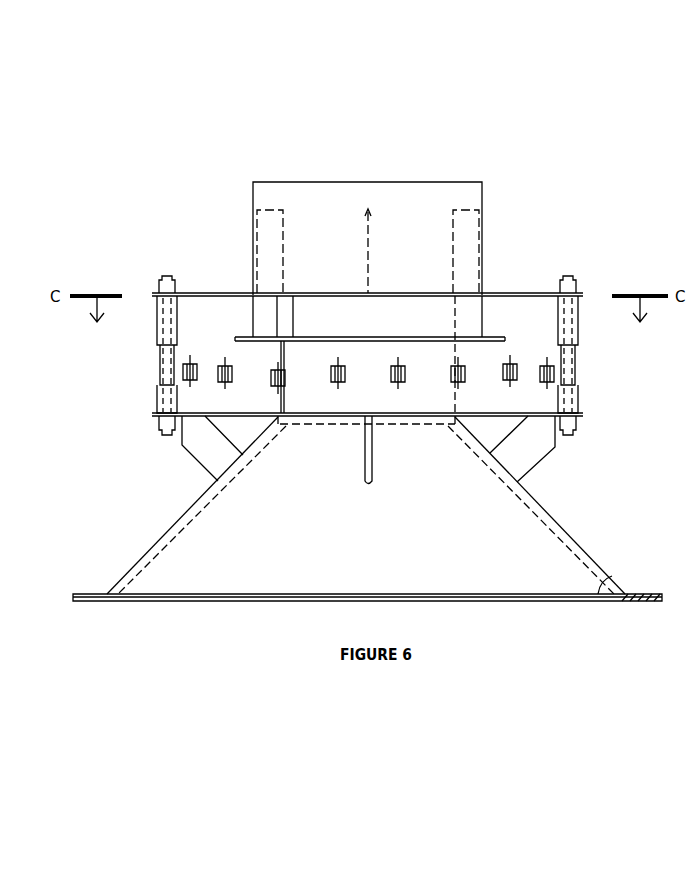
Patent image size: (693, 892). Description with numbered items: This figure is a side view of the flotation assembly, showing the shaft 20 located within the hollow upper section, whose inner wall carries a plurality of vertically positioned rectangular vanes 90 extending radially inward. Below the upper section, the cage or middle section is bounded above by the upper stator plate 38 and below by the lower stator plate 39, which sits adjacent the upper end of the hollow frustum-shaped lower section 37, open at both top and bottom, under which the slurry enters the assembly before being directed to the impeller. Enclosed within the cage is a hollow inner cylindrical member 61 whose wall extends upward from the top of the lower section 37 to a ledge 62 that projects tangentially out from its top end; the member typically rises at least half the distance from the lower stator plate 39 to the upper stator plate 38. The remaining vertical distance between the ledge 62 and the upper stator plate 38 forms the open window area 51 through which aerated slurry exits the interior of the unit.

The shaft 20 is at (374, 240).
The rectangular vanes 90 is at (462, 236).
The upper stator plate 38 is at (511, 292).
The ledge 62 is at (252, 350).
The window area 51 is at (379, 330).
The inner cylindrical member 61 is at (462, 357).
The lower section 37 is at (180, 514).
The lower stator plate 39 is at (510, 416).